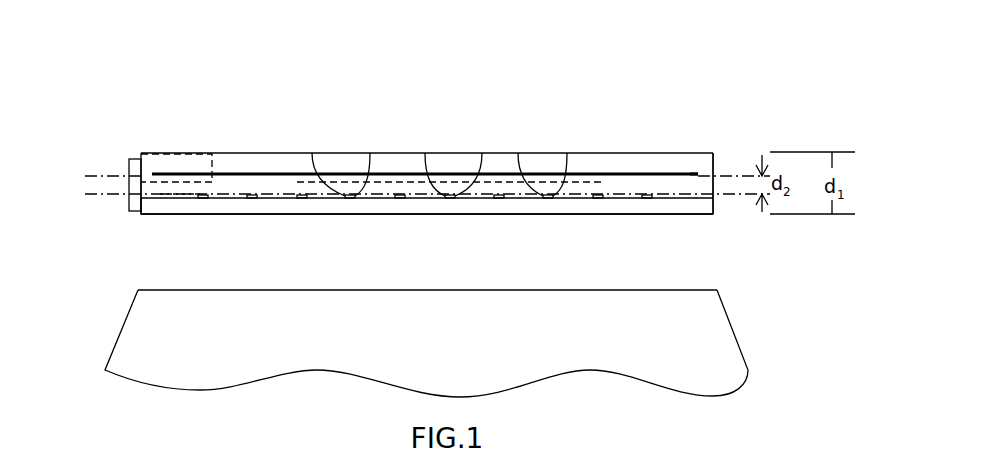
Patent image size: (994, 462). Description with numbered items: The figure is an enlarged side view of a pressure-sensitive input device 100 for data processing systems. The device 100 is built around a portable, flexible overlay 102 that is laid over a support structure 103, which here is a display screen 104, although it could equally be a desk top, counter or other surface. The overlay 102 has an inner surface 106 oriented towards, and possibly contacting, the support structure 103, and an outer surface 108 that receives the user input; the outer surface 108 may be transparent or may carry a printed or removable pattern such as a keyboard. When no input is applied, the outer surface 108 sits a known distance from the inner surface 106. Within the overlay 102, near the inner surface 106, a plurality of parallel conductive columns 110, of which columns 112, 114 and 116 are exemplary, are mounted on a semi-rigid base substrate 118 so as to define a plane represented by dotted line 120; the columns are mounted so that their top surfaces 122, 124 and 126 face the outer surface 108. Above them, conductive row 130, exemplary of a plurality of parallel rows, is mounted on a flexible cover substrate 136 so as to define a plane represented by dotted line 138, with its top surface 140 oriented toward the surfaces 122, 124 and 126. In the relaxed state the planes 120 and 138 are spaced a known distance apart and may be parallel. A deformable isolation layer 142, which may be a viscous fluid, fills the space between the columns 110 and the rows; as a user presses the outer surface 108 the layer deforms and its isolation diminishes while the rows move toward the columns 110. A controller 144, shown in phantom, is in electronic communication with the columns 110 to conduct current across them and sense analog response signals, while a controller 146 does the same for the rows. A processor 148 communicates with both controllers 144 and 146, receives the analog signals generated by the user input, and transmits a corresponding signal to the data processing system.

The pressure-sensitive input device 100 is at (588, 72).
The overlay 102 is at (245, 158).
The support structure 103 is at (235, 353).
The display screen 104 is at (168, 290).
The inner surface 106 is at (142, 216).
The outer surface 108 is at (623, 152).
The conductive columns 110 is at (203, 203).
The conductive column 112 is at (312, 153).
The conductive column 114 is at (425, 153).
The conductive column 116 is at (518, 153).
The base substrate 118 is at (673, 211).
The plane of conductive columns 120 is at (92, 195).
The top surface of column 122 is at (370, 153).
The top surface of column 124 is at (482, 153).
The top surface of column 126 is at (567, 153).
The conductive row 130 is at (650, 173).
The cover substrate 136 is at (703, 160).
The plane of conductive rows 138 is at (92, 173).
The top surface of row 140 is at (685, 175).
The isolation layer 142 is at (173, 188).
The controller 144 is at (300, 189).
The controller 146 is at (135, 170).
The processor 148 is at (157, 160).